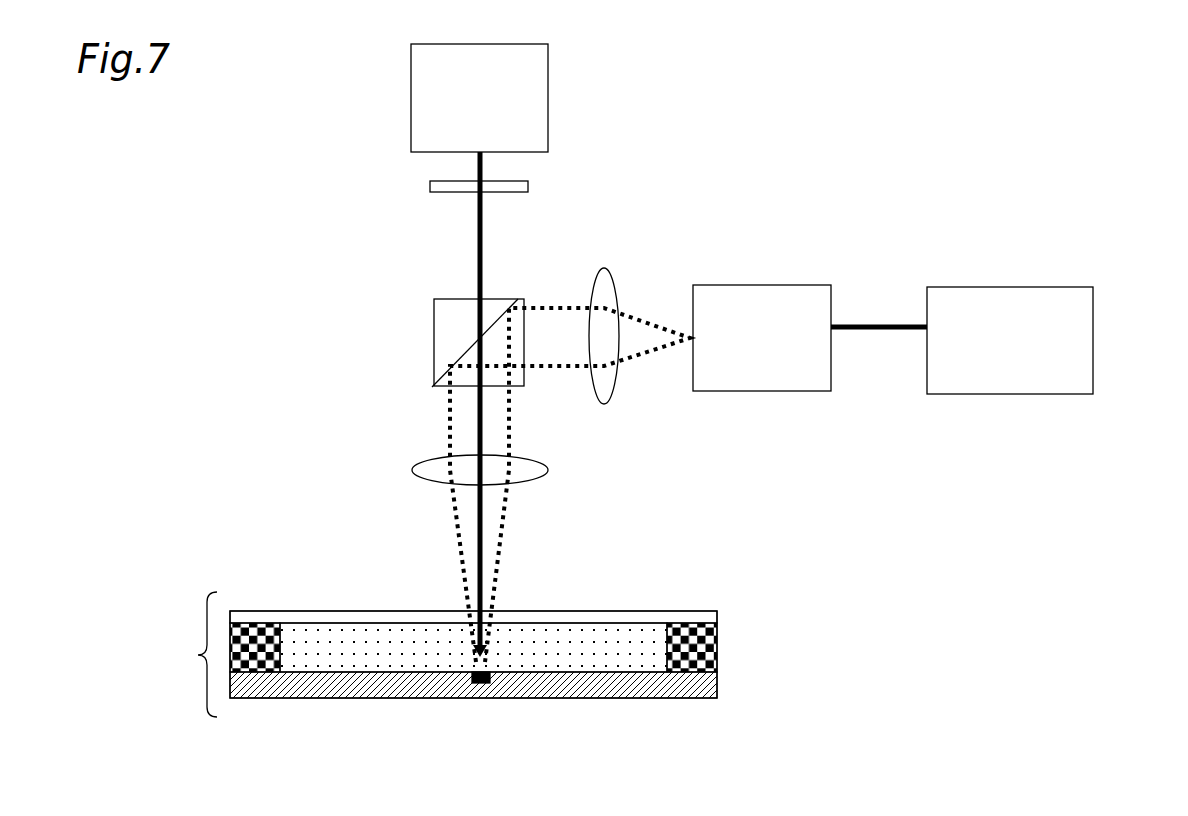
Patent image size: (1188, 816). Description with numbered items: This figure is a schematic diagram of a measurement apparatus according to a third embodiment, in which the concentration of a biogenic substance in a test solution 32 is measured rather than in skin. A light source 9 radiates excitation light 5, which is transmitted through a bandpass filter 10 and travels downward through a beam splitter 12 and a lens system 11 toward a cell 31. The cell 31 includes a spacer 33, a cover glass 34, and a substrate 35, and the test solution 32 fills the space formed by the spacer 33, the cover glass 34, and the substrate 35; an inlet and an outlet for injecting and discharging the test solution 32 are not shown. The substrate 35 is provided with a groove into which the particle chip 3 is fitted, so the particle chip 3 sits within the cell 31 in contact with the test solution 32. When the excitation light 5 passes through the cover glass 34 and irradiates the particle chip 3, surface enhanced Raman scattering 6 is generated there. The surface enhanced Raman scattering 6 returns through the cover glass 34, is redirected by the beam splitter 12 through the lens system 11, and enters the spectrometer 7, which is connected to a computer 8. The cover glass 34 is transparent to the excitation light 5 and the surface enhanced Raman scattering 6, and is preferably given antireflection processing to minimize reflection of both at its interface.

The particle chip 3 is at (493, 680).
The excitation light 5 is at (477, 249).
The surface enhanced Raman scattering 6 is at (510, 522).
The spectrometer 7 is at (763, 391).
The computer 8 is at (1013, 394).
The light source 9 is at (548, 97).
The bandpass filter 10 is at (528, 185).
The lens system 11 is at (604, 400).
The beam splitter 12 is at (434, 342).
The cell 31 is at (198, 655).
The test solution 32 is at (598, 648).
The spacer 33 is at (717, 643).
The cover glass 34 is at (717, 618).
The substrate 35 is at (473, 697).